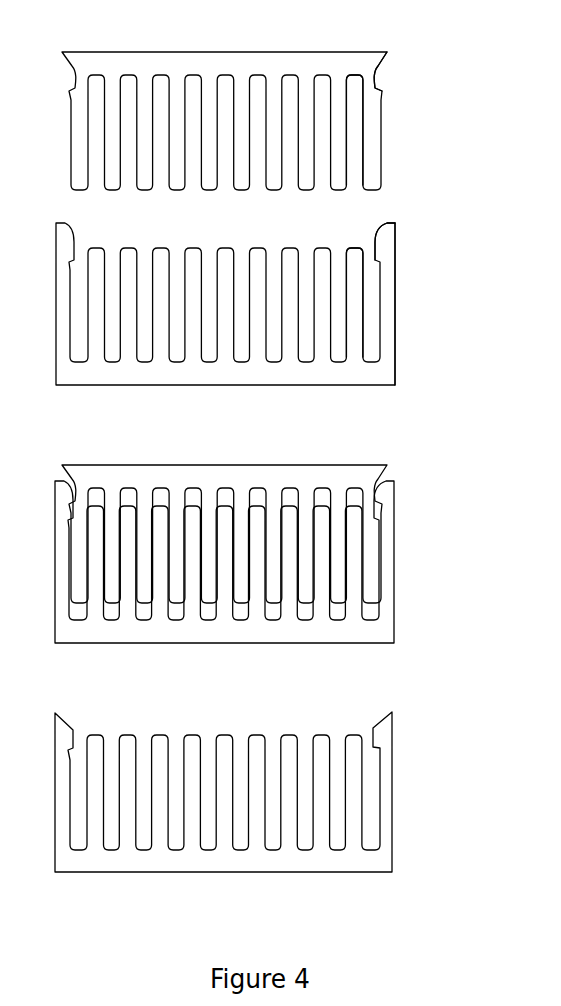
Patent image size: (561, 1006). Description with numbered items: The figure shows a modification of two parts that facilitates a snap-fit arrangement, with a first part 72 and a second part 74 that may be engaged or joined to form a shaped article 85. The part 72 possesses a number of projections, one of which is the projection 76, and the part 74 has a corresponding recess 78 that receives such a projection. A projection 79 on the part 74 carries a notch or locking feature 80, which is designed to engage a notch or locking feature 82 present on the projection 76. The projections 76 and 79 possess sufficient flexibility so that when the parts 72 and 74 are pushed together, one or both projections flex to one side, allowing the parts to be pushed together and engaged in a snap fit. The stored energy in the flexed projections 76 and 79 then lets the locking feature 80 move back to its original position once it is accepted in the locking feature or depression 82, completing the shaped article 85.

The part 72 is at (261, 366).
The part 74 is at (272, 558).
The projection 76 is at (369, 133).
The recess 78 is at (370, 280).
The projection 79 is at (387, 322).
The notch or locking feature 80 is at (377, 260).
The notch or locking feature 82 is at (378, 89).
The shaped article 85 is at (409, 782).